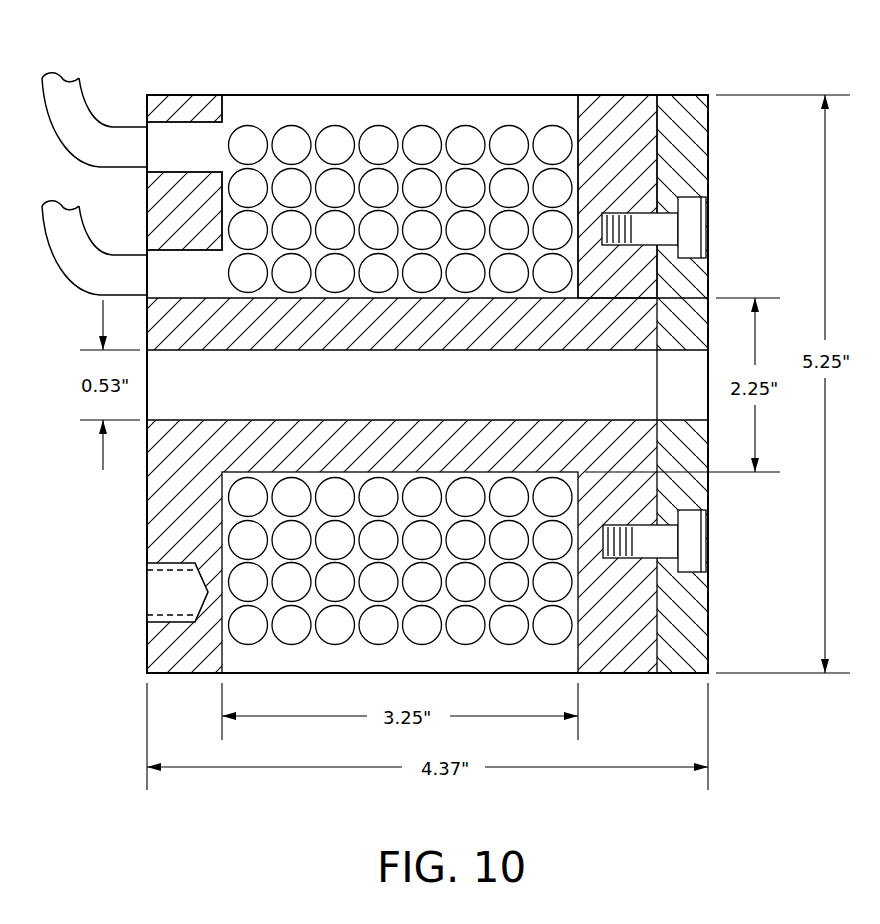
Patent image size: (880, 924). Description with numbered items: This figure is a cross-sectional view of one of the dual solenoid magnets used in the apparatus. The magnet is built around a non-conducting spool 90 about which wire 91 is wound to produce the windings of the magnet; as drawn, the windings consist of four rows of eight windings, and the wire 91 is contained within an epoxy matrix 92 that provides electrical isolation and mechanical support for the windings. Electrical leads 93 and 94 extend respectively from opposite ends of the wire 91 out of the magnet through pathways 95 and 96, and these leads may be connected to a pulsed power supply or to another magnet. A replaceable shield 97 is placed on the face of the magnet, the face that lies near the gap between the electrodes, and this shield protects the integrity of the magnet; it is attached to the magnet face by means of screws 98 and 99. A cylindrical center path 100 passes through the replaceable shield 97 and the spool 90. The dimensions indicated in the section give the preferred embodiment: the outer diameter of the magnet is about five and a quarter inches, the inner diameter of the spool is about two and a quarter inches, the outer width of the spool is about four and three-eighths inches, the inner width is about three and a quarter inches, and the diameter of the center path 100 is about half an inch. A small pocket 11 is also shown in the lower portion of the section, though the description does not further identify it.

The thermocouple pocket 11 is at (170, 590).
The non-conducting spool 90 is at (622, 113).
The wire 91 is at (505, 130).
The epoxy matrix 92 is at (402, 113).
The electrical lead 93 is at (80, 108).
The electrical lead 94 is at (75, 258).
The pathway 95 is at (218, 123).
The pathway 96 is at (147, 252).
The replaceable shield 97 is at (680, 125).
The screw 98 is at (695, 232).
The screw 99 is at (695, 540).
The cylindrical center path 100 is at (534, 393).